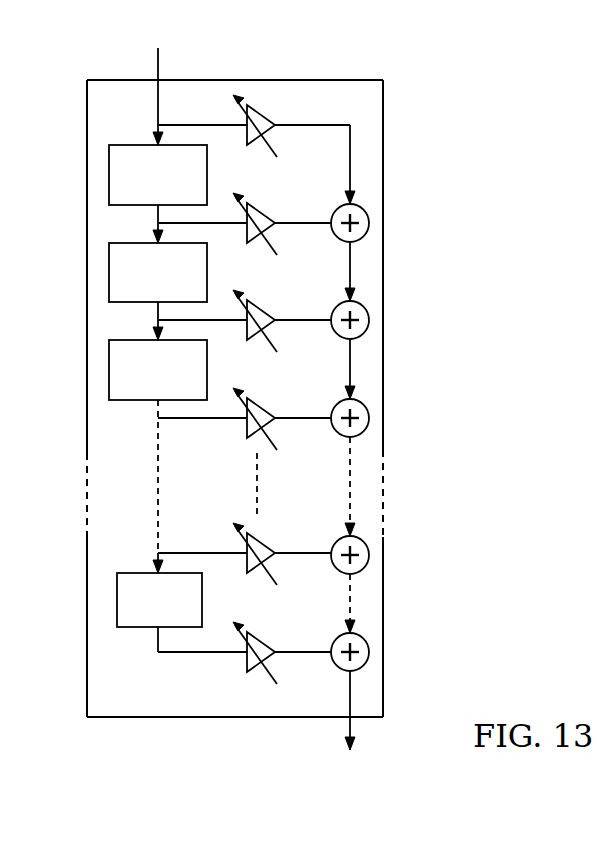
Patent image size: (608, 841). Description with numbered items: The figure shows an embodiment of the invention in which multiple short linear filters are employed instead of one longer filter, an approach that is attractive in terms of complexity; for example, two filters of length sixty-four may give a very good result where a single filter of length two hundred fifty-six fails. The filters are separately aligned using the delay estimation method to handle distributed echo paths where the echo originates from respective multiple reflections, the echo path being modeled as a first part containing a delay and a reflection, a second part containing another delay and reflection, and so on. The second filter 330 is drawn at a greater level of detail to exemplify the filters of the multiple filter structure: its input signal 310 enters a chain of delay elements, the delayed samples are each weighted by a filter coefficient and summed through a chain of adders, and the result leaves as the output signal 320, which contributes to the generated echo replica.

The input signal 310 is at (158, 56).
The output signal 320 is at (355, 724).
The FILTER 2 330 is at (383, 153).